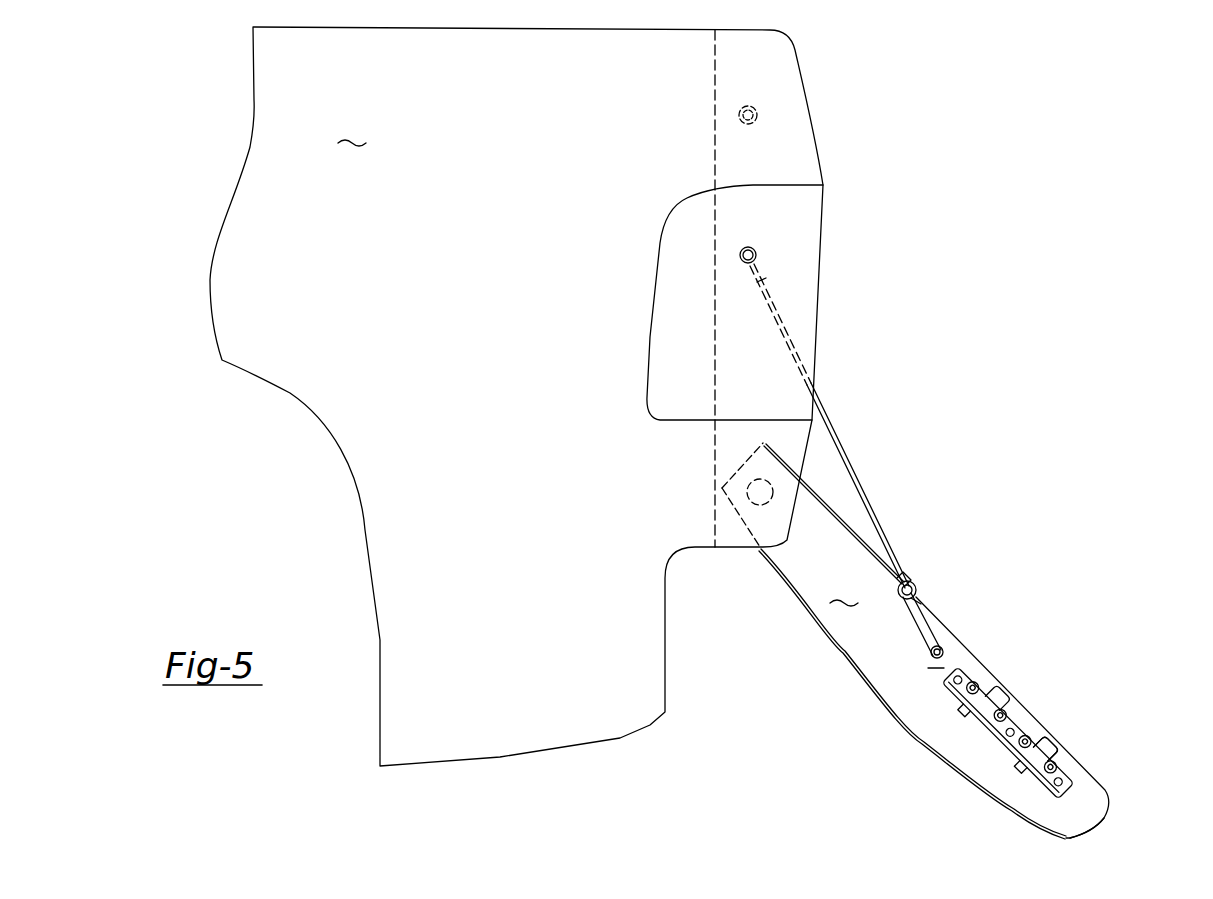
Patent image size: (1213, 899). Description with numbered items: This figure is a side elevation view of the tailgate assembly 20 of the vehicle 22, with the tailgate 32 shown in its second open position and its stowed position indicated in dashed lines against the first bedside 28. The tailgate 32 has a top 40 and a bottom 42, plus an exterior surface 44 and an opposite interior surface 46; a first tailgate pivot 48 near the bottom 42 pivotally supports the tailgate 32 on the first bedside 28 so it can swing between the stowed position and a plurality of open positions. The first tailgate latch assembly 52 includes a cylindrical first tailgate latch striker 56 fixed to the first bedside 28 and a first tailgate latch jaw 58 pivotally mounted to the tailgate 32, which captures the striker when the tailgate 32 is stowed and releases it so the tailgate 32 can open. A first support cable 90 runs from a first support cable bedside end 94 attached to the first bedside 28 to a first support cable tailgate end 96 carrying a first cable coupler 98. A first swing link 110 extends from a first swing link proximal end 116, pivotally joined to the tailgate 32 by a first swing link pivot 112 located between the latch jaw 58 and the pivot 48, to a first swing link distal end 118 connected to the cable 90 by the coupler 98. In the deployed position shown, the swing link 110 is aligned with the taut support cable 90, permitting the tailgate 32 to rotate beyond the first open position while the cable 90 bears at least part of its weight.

The tailgate assembly 20 is at (1047, 302).
The vehicle 22 is at (516, 396).
The first bedside 28 is at (776, 72).
The tailgate 32 is at (936, 641).
The top 40 is at (1102, 812).
The bottom 42 is at (737, 465).
The exterior surface 44 is at (880, 710).
The interior surface 46 is at (980, 662).
The first tailgate pivot 48 is at (748, 494).
The first tailgate latch assembly 52 is at (1060, 730).
The first tailgate latch striker 56 is at (738, 114).
The first tailgate latch jaw 58 is at (1057, 746).
The first support cable 90 is at (836, 432).
The first support cable bedside end 94 is at (758, 247).
The first support cable tailgate end 96 is at (905, 550).
The first cable coupler 98 is at (921, 578).
The first swing link 110 is at (913, 628).
The first swing link pivot 112 is at (925, 662).
The first swing link proximal end 116 is at (945, 648).
The first swing link distal end 118 is at (915, 604).